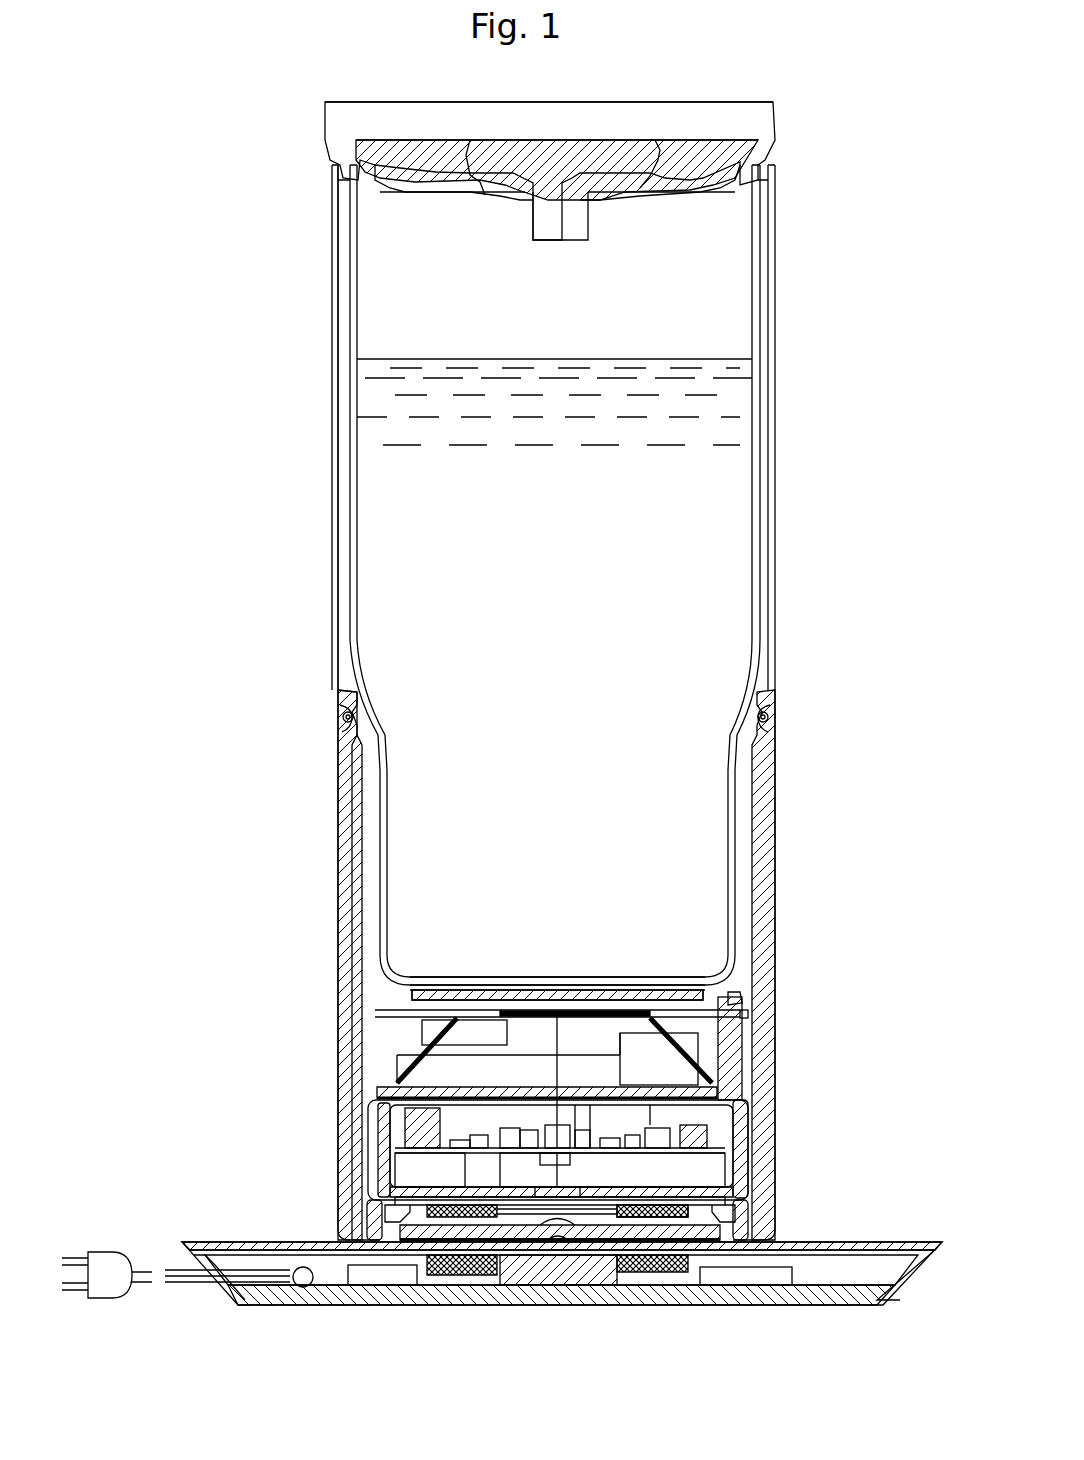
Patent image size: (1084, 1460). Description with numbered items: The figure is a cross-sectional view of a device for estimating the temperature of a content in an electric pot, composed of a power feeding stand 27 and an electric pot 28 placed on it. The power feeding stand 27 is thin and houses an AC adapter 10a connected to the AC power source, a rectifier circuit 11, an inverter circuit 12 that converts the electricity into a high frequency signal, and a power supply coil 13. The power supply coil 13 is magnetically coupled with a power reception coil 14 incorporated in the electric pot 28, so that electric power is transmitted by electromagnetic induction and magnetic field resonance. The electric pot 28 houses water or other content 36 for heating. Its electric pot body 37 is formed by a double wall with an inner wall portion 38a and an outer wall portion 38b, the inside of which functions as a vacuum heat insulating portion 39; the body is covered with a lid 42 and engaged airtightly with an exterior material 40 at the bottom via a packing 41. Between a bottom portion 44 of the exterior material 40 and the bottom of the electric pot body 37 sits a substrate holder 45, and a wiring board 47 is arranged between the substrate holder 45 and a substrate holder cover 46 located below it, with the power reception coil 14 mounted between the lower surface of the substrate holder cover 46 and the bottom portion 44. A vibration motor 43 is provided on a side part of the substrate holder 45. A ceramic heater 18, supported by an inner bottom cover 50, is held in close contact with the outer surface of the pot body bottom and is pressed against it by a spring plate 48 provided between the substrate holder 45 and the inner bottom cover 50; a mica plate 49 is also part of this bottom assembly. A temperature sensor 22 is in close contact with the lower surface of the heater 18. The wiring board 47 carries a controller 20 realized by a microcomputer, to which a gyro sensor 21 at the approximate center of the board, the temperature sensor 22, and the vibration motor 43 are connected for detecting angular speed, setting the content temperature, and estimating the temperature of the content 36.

The AC adapter 10a is at (103, 1260).
The rectifier circuit 11 is at (372, 1282).
The inverter circuit 12 is at (782, 1268).
The power supply coil 13 is at (652, 1278).
The power reception coil 14 is at (672, 1207).
The heater 18 is at (715, 985).
The controller 20 is at (700, 1150).
The gyro sensor 21 is at (560, 1130).
The temperature sensor 22 is at (745, 1022).
The power feeding stand 27 is at (878, 1242).
The electric pot 28 is at (892, 188).
The content 36 is at (375, 436).
The electric pot body 37 is at (866, 380).
The inner wall portion 38a is at (760, 325).
The outer wall portion 38b is at (768, 358).
The vacuum heat insulating portion 39 is at (762, 388).
The exterior material 40 is at (768, 800).
The packing 41 is at (768, 718).
The lid 42 is at (765, 132).
The vibration motor 43 is at (640, 1045).
The bottom portion 44 is at (575, 1245).
The substrate holder 45 is at (740, 1110).
The substrate holder cover 46 is at (380, 1200).
The wiring board 47 is at (395, 1150).
The spring plate 48 is at (397, 1083).
The mica plate 49 is at (375, 1012).
The inner bottom cover 50 is at (740, 1000).